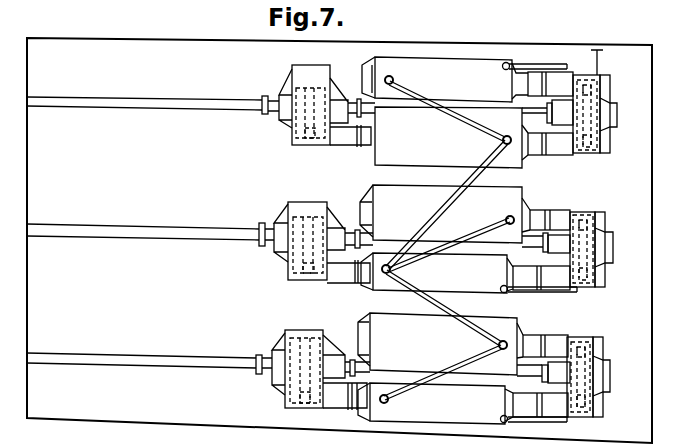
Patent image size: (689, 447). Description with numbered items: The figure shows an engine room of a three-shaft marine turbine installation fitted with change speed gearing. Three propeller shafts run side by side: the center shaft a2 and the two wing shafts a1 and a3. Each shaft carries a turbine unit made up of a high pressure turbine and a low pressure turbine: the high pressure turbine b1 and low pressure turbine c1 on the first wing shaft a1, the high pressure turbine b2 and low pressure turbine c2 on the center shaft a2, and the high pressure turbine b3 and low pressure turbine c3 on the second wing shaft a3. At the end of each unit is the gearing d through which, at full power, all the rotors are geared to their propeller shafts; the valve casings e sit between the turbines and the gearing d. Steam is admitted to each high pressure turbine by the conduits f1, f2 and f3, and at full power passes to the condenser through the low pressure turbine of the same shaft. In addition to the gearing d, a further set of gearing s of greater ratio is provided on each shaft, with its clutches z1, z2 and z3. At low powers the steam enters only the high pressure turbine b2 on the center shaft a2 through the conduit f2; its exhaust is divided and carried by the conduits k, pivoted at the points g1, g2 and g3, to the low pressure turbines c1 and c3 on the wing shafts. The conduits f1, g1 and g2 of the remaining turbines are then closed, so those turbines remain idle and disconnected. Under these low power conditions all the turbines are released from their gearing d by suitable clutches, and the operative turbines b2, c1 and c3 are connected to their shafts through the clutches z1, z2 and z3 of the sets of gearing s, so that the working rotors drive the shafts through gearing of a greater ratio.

The wing propeller shaft a1 is at (117, 104).
The center propeller shaft a2 is at (105, 228).
The wing propeller shaft a3 is at (92, 357).
The high pressure turbine b1 is at (445, 79).
The high pressure turbine b2 is at (437, 273).
The high pressure turbine b3 is at (435, 403).
The low pressure turbine c1 is at (474, 134).
The low pressure turbine c2 is at (465, 219).
The low pressure turbine c3 is at (464, 348).
The gearing d is at (588, 142).
The valve casing e is at (550, 342).
The steam conduit f1 is at (567, 66).
The steam conduit f2 is at (577, 290).
The steam conduit f3 is at (567, 420).
The steam conduit g1 is at (393, 85).
The steam conduit g2 is at (417, 251).
The pivot g3 is at (405, 391).
The steam conduit k is at (449, 240).
The set of gearing s is at (313, 121).
The clutch z1 is at (340, 140).
The clutch z2 is at (345, 273).
The clutch z3 is at (335, 404).